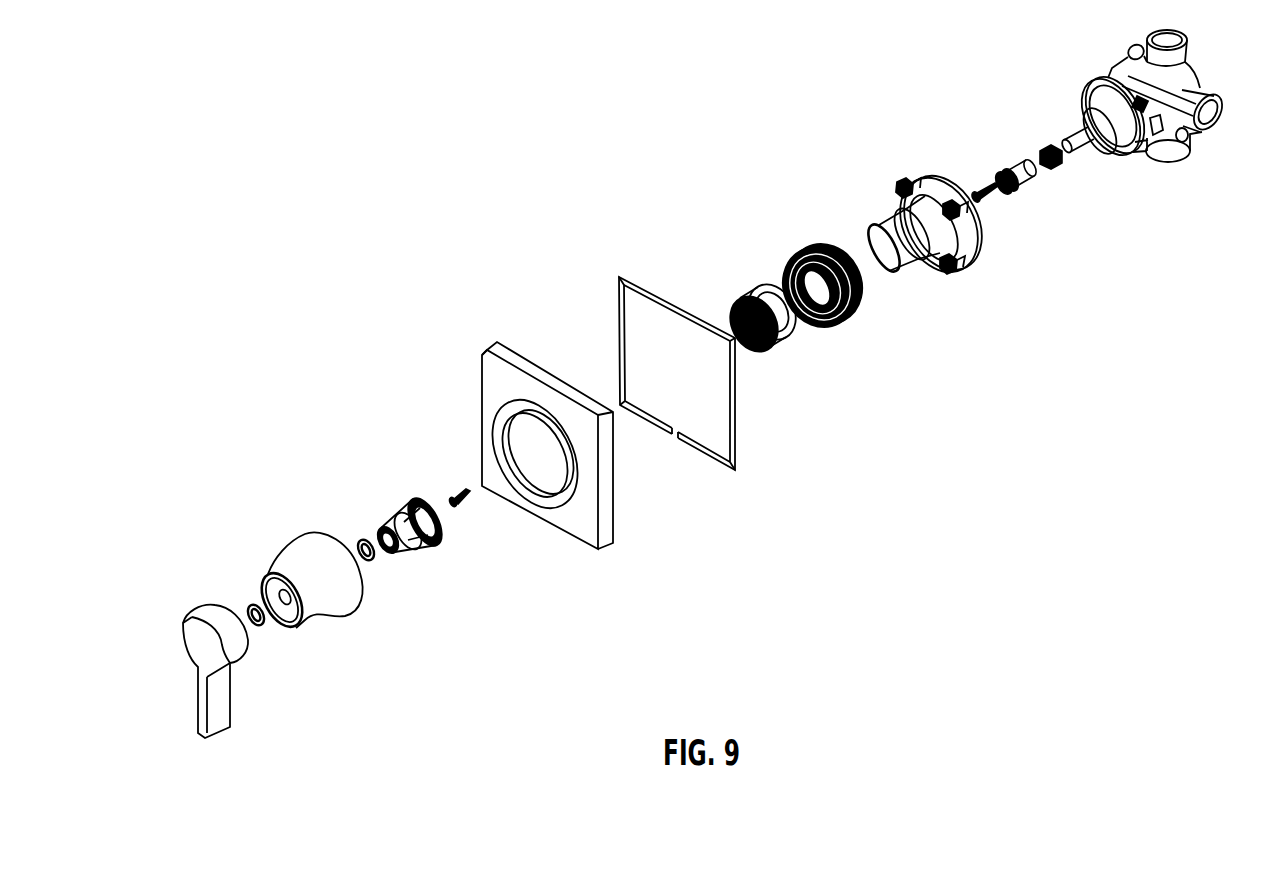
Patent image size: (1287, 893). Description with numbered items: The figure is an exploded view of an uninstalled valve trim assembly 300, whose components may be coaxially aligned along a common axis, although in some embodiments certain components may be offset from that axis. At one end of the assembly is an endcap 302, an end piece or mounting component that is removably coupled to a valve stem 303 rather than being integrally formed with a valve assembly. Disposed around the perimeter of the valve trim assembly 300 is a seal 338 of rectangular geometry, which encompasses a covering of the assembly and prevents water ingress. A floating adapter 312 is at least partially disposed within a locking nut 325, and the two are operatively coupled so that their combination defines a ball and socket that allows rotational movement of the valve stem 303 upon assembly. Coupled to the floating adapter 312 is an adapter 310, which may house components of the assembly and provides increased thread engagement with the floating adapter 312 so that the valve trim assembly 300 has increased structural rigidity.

The valve trim assembly 300 is at (377, 89).
The endcap 302 is at (1107, 139).
The valve stem 303 is at (1067, 141).
The adapter 310 is at (940, 186).
The floating adapter 312 is at (757, 295).
The locking nut 325 is at (797, 251).
The seal 338 is at (619, 277).